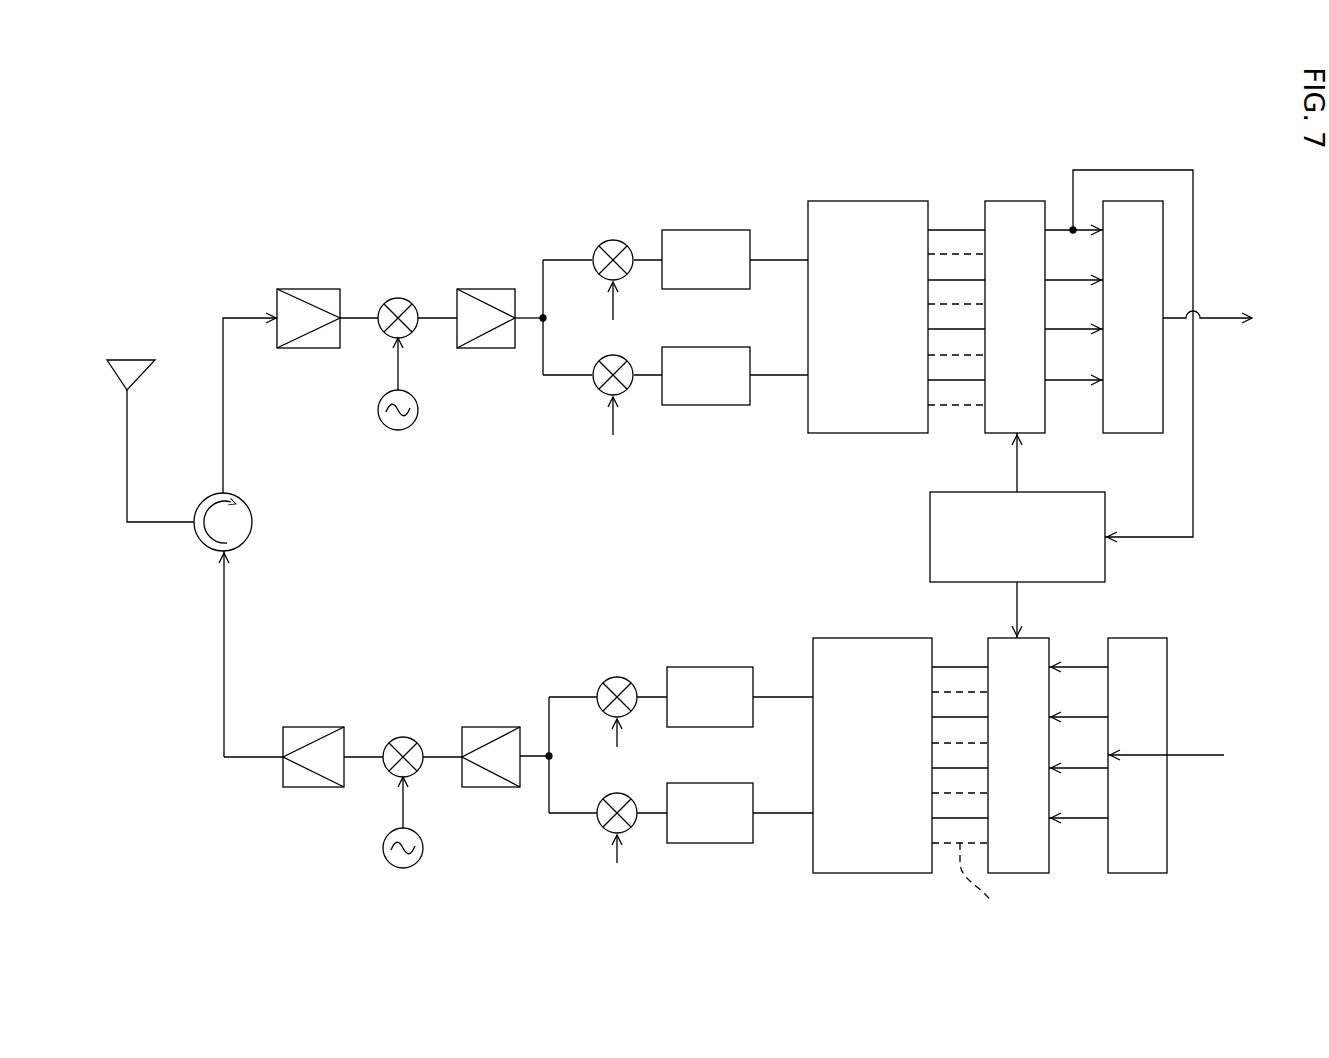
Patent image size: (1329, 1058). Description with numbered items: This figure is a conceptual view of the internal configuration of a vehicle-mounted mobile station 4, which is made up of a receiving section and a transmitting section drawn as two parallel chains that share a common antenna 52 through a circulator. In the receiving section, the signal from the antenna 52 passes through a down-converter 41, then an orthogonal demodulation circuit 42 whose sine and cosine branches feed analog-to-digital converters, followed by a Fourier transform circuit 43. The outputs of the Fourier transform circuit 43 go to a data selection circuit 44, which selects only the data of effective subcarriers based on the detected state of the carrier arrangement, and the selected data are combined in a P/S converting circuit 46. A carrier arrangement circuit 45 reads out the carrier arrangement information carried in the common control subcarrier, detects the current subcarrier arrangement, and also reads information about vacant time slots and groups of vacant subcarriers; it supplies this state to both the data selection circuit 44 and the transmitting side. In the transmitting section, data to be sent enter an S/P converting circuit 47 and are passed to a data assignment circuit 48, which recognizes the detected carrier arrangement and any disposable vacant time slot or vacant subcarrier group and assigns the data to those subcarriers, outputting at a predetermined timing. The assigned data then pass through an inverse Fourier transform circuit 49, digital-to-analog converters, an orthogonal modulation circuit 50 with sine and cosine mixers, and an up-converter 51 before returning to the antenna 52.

The vehicle-mounted mobile station 4 is at (452, 175).
The down-converter 41 is at (390, 264).
The orthogonal demodulation circuit 42 is at (608, 207).
The Fourier transform circuit 43 is at (865, 201).
The data selection circuit 44 is at (1013, 201).
The carrier arrangement circuit 45 is at (1058, 492).
The P/S converting circuit 46 is at (1133, 201).
The S/P converting circuit 47 is at (1153, 638).
The data assignment circuit 48 is at (1040, 638).
The inverse Fourier transform circuit 49 is at (870, 638).
The orthogonal modulation circuit 50 is at (612, 637).
The up-converter 51 is at (402, 692).
The antenna 52 is at (122, 360).